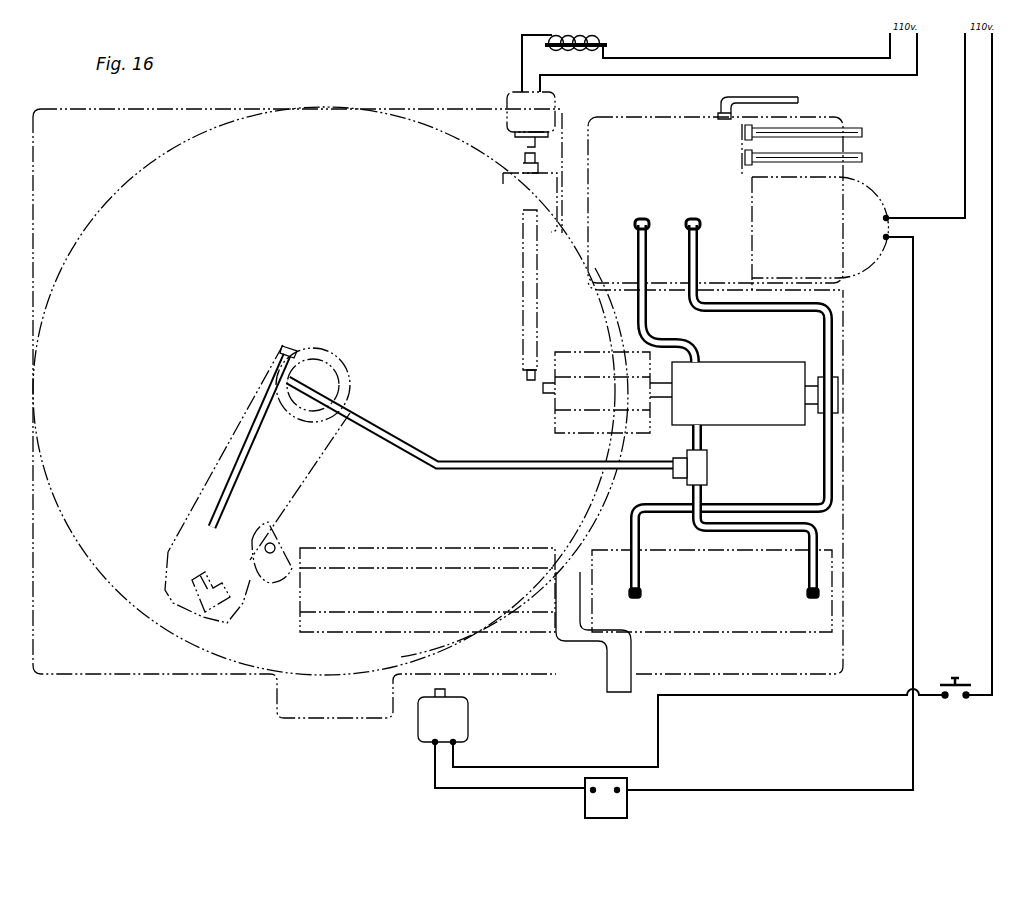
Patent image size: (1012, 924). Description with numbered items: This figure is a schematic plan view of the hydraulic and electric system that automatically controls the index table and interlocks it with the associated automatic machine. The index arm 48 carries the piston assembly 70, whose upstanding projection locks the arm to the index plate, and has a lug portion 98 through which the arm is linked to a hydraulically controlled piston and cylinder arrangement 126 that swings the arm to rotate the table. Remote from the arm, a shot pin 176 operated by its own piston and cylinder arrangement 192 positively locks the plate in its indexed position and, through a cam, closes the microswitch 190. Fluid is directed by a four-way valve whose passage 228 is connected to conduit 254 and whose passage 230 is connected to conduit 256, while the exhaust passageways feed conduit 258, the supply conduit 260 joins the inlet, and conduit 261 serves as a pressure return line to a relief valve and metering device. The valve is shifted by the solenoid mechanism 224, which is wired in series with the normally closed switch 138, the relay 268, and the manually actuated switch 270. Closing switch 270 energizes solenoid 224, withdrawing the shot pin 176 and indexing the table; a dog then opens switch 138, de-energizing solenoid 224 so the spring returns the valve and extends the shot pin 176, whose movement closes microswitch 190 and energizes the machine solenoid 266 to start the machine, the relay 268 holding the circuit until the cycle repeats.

The index arm 48 is at (298, 462).
The piston assembly 70 is at (215, 563).
The lug portion 98 is at (278, 523).
The piston and cylinder arrangement 126 is at (743, 608).
The switch 138 is at (470, 728).
The shot pin 176 is at (565, 399).
The microswitch 190 is at (506, 102).
The piston and cylinder arrangement 192 is at (764, 428).
The solenoid mechanism 224 is at (872, 214).
The passage 228 is at (644, 222).
The passage 230 is at (695, 222).
The conduit 254 is at (642, 286).
The conduit 256 is at (769, 309).
The conduit 258 is at (858, 157).
The supply conduit 260 is at (850, 130).
The conduit 261 is at (799, 100).
The machine solenoid 266 is at (610, 44).
The relay 268 is at (628, 808).
The switch 270 is at (951, 679).